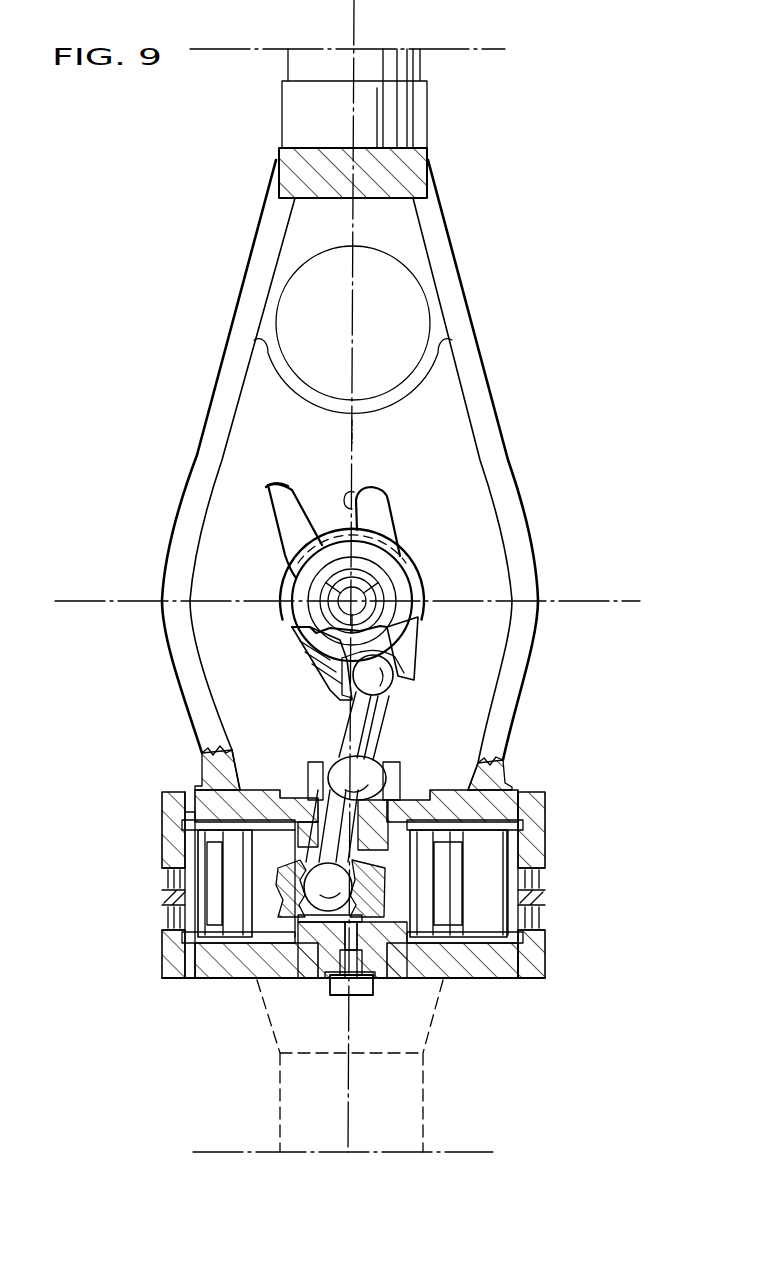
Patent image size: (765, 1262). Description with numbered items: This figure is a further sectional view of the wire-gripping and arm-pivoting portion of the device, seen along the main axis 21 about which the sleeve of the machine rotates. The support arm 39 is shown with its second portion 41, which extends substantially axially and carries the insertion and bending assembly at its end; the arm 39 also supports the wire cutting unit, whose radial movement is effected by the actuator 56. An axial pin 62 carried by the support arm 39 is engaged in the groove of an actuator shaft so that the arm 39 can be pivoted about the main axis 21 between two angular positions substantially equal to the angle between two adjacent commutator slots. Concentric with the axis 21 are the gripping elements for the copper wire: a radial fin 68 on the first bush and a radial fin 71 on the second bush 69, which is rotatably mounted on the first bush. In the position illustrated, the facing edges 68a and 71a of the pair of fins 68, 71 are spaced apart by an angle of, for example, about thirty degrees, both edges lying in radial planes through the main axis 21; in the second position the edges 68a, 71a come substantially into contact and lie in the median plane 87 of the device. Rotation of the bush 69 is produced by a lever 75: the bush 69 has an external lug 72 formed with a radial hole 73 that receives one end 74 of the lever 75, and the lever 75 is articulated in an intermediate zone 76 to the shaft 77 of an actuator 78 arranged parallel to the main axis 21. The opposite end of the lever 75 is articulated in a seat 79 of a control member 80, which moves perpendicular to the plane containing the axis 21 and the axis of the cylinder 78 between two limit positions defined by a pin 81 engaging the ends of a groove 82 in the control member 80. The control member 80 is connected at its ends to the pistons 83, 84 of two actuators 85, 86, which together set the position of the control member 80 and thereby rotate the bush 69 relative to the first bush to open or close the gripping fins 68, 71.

The actuator 56 is at (302, 68).
The second portion of the support arm 41 is at (405, 173).
The axial pin 62 is at (408, 298).
The support arm 39 is at (485, 361).
The median plane 87 is at (352, 432).
The facing edge of radial fin 71a is at (292, 489).
The radial fin 71 is at (287, 527).
The facing edge of radial fin 68a is at (352, 482).
The radial fin 68 is at (377, 507).
The main axis 21 is at (368, 602).
The second bush 69 is at (312, 641).
The external lug 72 is at (408, 668).
The radial hole 73 is at (338, 697).
The end of the lever 74 is at (390, 690).
The lever 75 is at (385, 728).
The intermediate zone of the lever 76 is at (360, 778).
The shaft 77 is at (310, 767).
The actuator 86 is at (547, 831).
The control member 80 is at (275, 880).
The piston 84 is at (427, 883).
The actuator 85 is at (154, 862).
The piston 83 is at (227, 943).
The groove 82 is at (320, 920).
The actuator 78 is at (330, 892).
The pin 81 is at (347, 940).
The seat 79 is at (380, 920).